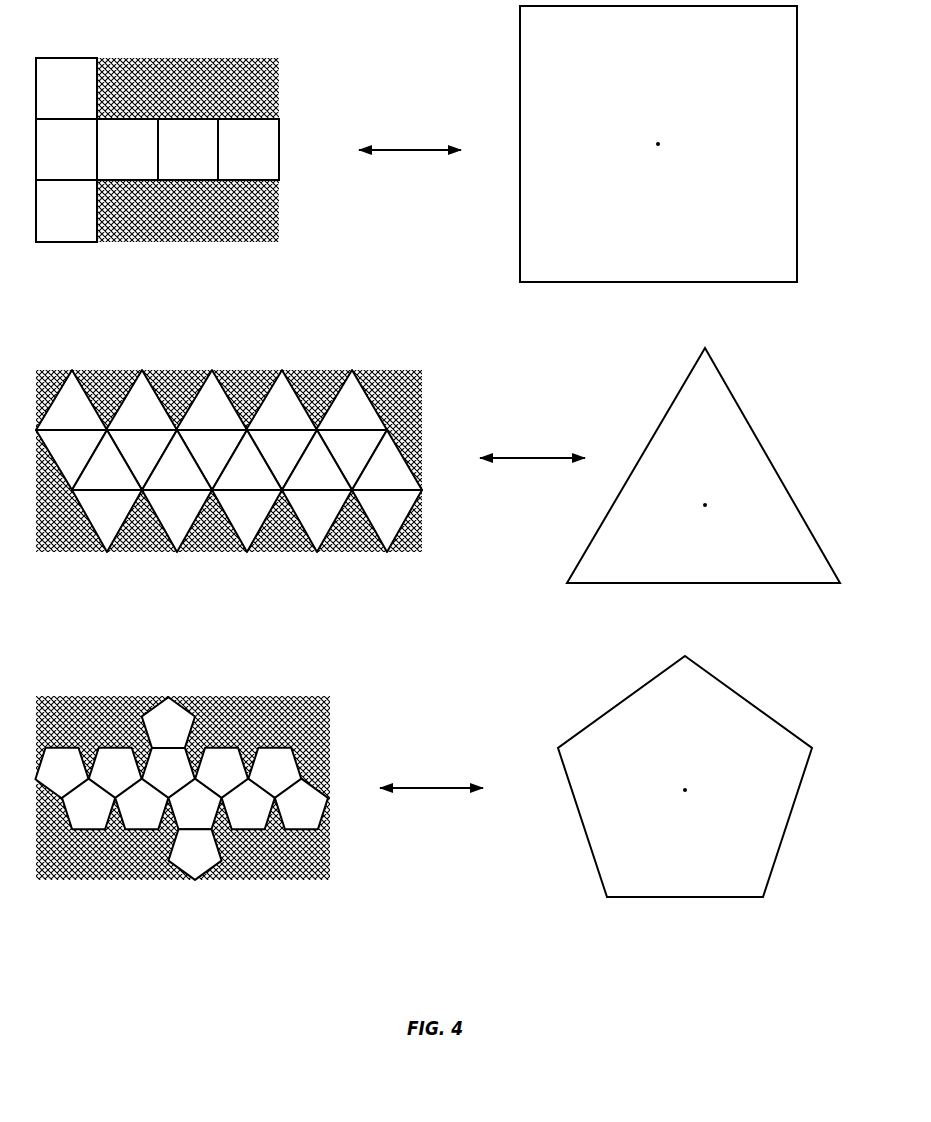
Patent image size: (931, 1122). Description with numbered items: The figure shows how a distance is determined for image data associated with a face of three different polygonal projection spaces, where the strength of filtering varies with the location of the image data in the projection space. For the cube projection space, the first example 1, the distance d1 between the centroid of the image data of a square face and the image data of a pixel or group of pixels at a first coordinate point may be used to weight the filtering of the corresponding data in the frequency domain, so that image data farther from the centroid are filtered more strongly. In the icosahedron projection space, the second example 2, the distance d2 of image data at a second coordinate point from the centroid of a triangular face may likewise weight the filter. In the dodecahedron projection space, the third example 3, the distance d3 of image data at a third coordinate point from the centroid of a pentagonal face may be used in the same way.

The cube projection space (point (x1, y1) in square projection face) 1 is at (416, 144).
The distance d1 is at (658, 144).
The icosahedron projection space (point (x2, y2) in triangular projection face) 2 is at (438, 468).
The distance d2 is at (725, 435).
The dodecahedron projection space (point (x3, y3) in pentagonal projection face) 3 is at (423, 788).
The distance d3 is at (685, 790).